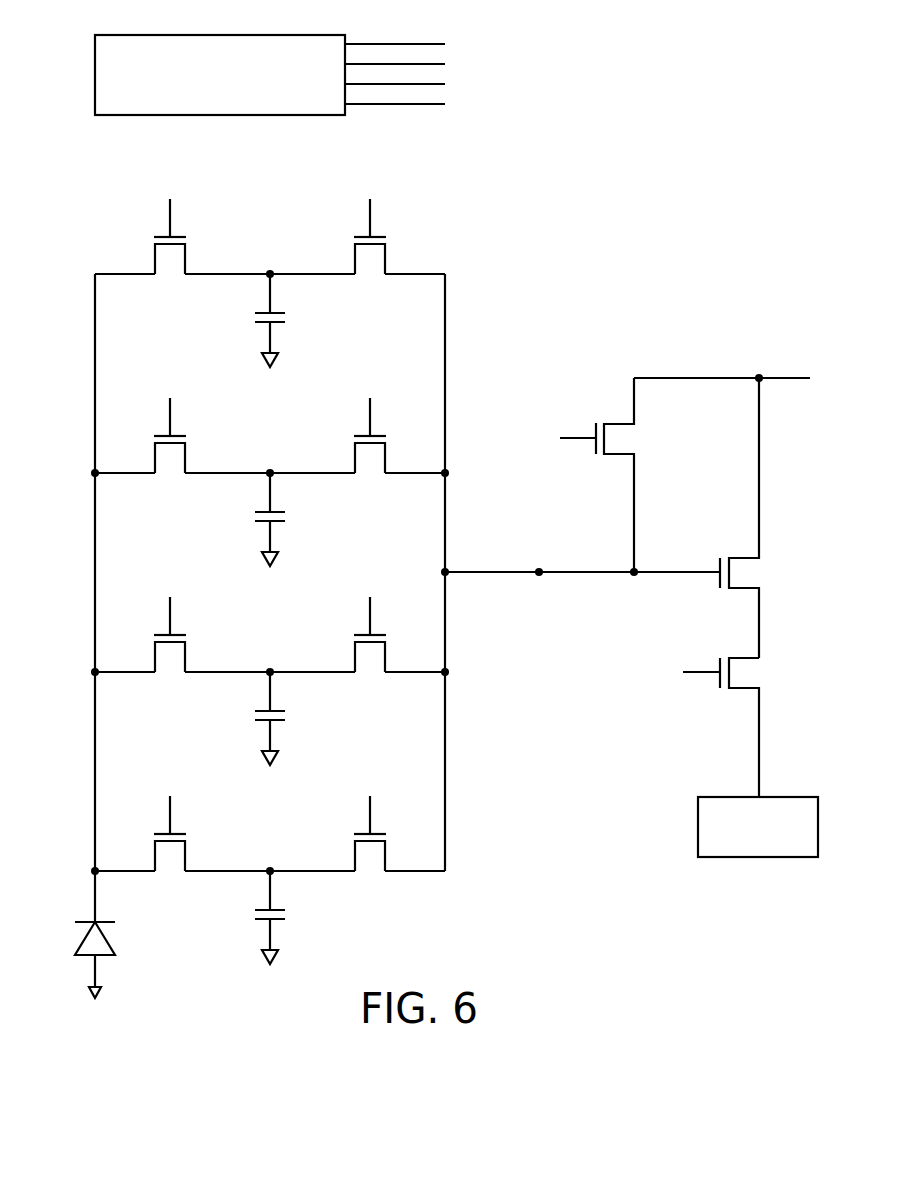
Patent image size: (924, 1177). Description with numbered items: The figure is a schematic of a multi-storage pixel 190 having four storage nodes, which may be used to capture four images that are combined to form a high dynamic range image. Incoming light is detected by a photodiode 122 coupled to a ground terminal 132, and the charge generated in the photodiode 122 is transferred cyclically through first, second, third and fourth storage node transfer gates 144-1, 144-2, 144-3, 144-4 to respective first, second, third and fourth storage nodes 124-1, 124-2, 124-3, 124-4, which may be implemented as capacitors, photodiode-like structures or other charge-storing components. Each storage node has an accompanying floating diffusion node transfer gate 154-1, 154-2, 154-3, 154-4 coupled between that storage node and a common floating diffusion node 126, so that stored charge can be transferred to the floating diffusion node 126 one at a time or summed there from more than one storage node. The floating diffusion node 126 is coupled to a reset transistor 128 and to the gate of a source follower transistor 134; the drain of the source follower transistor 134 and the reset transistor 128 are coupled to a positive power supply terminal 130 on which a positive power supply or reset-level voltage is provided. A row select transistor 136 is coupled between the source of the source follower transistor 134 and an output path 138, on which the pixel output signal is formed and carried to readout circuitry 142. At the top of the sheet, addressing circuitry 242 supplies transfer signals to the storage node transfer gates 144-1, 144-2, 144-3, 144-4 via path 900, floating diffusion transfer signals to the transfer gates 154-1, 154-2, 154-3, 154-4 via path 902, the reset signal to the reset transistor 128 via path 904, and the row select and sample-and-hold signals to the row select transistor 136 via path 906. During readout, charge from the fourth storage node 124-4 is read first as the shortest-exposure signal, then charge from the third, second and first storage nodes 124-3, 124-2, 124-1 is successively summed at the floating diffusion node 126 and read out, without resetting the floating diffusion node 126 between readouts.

The multi-storage pixel 190 is at (643, 113).
The addressing circuitry 242 is at (160, 108).
The path 900 is at (381, 42).
The path 902 is at (408, 63).
The path 904 is at (382, 86).
The path 906 is at (408, 106).
The first storage node transfer gate 144-1 is at (169, 269).
The second storage node transfer gate 144-2 is at (169, 468).
The third storage node transfer gate 144-3 is at (169, 667).
The fourth storage node transfer gate 144-4 is at (169, 866).
The first floating diffusion node transfer gate 154-1 is at (371, 269).
The second floating diffusion node transfer gate 154-2 is at (371, 468).
The third floating diffusion node transfer gate 154-3 is at (371, 667).
The fourth floating diffusion node transfer gate 154-4 is at (371, 866).
The first storage node 124-1 is at (270, 269).
The second storage node 124-2 is at (270, 468).
The third storage node 124-3 is at (270, 667).
The fourth storage node 124-4 is at (270, 866).
The photodiode 122 is at (90, 942).
The ground terminal 132 is at (90, 990).
The floating diffusion node 126 is at (539, 568).
The reset transistor 128 is at (620, 426).
The positive power supply terminal 130 is at (790, 376).
The source follower transistor 134 is at (745, 560).
The row select transistor 136 is at (745, 690).
The output path 138 is at (761, 734).
The readout circuitry 142 is at (724, 803).